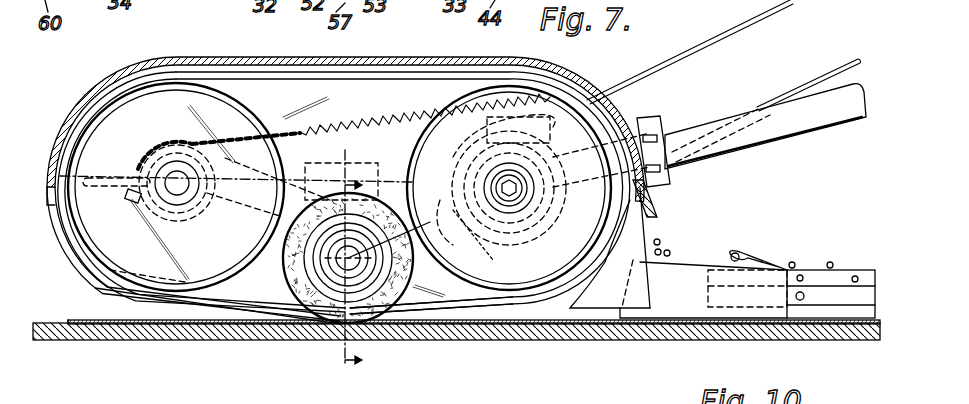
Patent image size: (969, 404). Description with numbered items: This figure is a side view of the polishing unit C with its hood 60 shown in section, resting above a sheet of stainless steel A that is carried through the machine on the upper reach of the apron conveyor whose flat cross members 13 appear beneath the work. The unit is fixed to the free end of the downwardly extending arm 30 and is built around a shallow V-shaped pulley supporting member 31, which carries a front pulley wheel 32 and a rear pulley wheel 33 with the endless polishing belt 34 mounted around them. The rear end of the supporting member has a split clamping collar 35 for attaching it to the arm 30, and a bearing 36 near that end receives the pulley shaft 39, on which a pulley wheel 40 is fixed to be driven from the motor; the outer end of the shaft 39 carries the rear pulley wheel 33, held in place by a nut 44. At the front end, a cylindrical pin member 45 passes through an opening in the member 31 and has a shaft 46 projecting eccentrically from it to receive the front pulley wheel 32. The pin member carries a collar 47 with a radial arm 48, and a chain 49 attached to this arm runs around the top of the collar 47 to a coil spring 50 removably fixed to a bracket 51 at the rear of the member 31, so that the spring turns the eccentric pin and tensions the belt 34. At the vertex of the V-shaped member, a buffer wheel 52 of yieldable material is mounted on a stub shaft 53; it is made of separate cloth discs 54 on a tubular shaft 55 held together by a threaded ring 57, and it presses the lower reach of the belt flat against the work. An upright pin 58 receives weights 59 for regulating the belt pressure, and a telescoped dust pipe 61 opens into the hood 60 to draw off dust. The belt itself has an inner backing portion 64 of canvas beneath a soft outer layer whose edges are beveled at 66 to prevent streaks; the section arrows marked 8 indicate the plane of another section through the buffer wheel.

The flat cross members 13 is at (685, 342).
The arm 30 is at (712, 118).
The shallow V-shaped member 31 is at (283, 165).
The pulley wheel 32 is at (250, 114).
The pulley wheel 33 is at (440, 98).
The endless polishing belt 34 is at (660, 214).
The split clamping collar 35 is at (655, 118).
The bearing 36 is at (500, 232).
The pulley shaft 39 is at (485, 216).
The pulley wheel 40 is at (550, 212).
The nut 44 is at (527, 222).
The cylindrical pin member 45 is at (203, 212).
The shaft 46 is at (173, 207).
The collar 47 is at (127, 214).
The radial arm 48 is at (118, 177).
The chain 49 is at (230, 131).
The coil spring 50 is at (333, 112).
The bracket 51 is at (598, 91).
The buffer wheel 52 is at (285, 279).
The stub shaft 53 is at (410, 237).
The cloth discs 54 is at (332, 292).
The tubular shaft 55 is at (388, 318).
The ring 57 is at (343, 300).
The upright pin 58 is at (420, 130).
The weights 59 is at (413, 183).
The hood 60 is at (388, 59).
The telescoped dust pipe 61 is at (840, 274).
The inner belt portion 64 is at (213, 320).
The beveled edges 66 is at (446, 323).
The section line 8- 8 is at (356, 269).
The sheet of stainless steel A is at (97, 320).
The polishing unit C is at (578, 67).